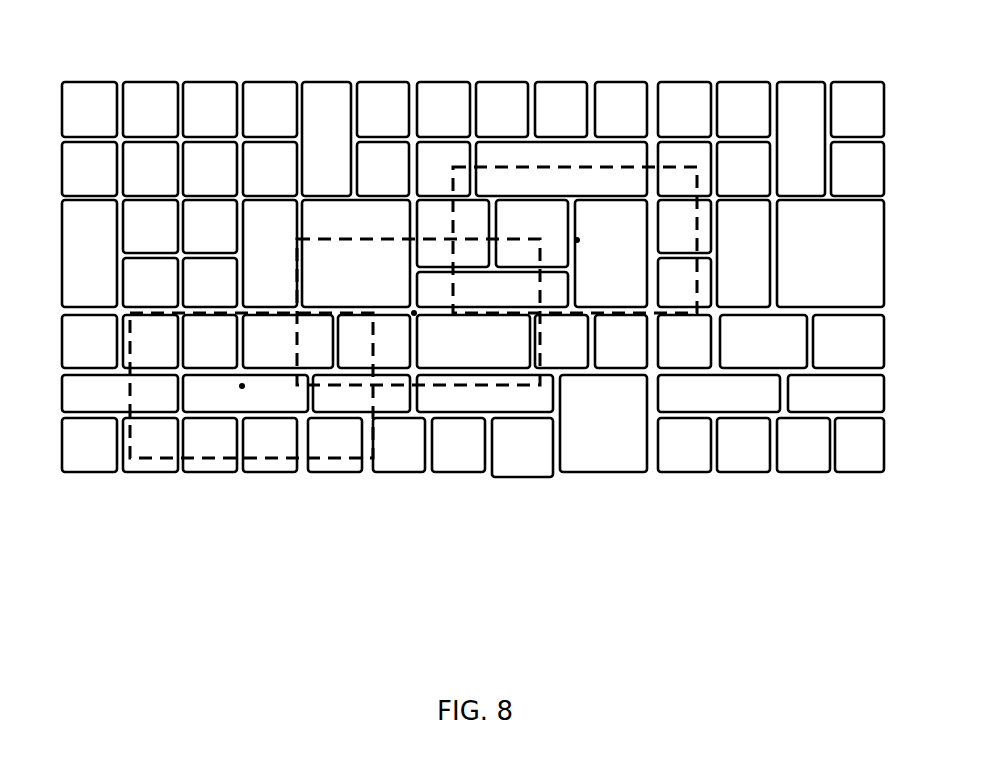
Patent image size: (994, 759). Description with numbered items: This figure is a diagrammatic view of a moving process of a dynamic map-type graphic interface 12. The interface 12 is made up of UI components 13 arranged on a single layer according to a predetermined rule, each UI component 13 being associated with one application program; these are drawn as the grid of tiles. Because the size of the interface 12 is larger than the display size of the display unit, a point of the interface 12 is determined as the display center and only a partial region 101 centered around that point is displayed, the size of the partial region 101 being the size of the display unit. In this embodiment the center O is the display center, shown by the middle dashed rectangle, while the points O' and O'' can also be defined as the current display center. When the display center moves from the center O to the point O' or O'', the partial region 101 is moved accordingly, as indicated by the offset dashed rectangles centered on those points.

The dynamic map-type graphic interface 12 is at (400, 57).
The UI component 13 is at (455, 108).
The partial region 101 is at (478, 385).